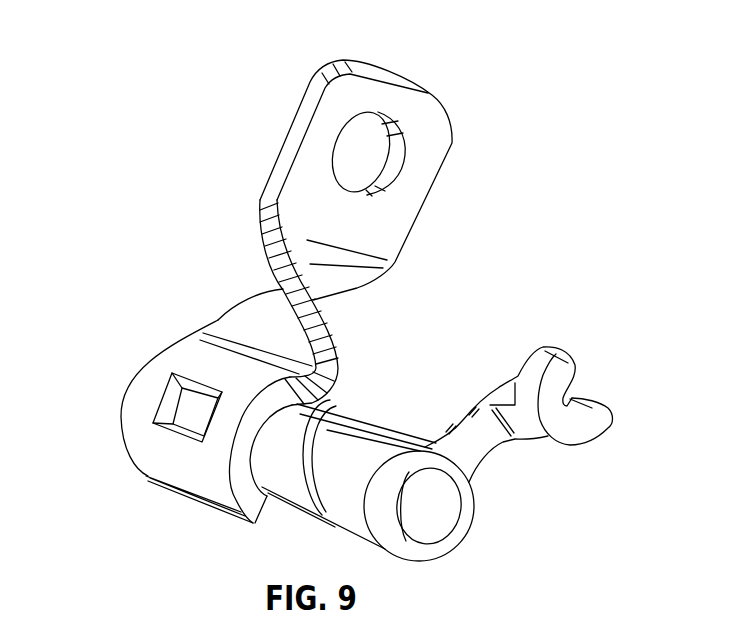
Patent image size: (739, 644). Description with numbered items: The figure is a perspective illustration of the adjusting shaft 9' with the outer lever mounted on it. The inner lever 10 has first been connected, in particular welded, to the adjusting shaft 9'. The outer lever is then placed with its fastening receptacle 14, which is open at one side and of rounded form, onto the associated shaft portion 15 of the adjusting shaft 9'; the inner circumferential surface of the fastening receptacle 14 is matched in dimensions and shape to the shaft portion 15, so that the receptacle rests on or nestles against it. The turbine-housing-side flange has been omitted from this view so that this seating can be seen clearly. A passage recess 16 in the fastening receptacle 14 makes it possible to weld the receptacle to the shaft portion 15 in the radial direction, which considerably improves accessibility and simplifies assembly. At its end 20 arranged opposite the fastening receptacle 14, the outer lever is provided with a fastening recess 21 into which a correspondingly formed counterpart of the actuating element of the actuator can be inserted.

The end of the outer lever 20 is at (400, 84).
The fastening recess 21 is at (366, 151).
The fastening receptacle 14 is at (115, 390).
The passage recess 16 is at (146, 409).
The shaft portion 15 is at (192, 416).
The adjusting shaft 9' is at (368, 457).
The inner lever 10 is at (507, 432).